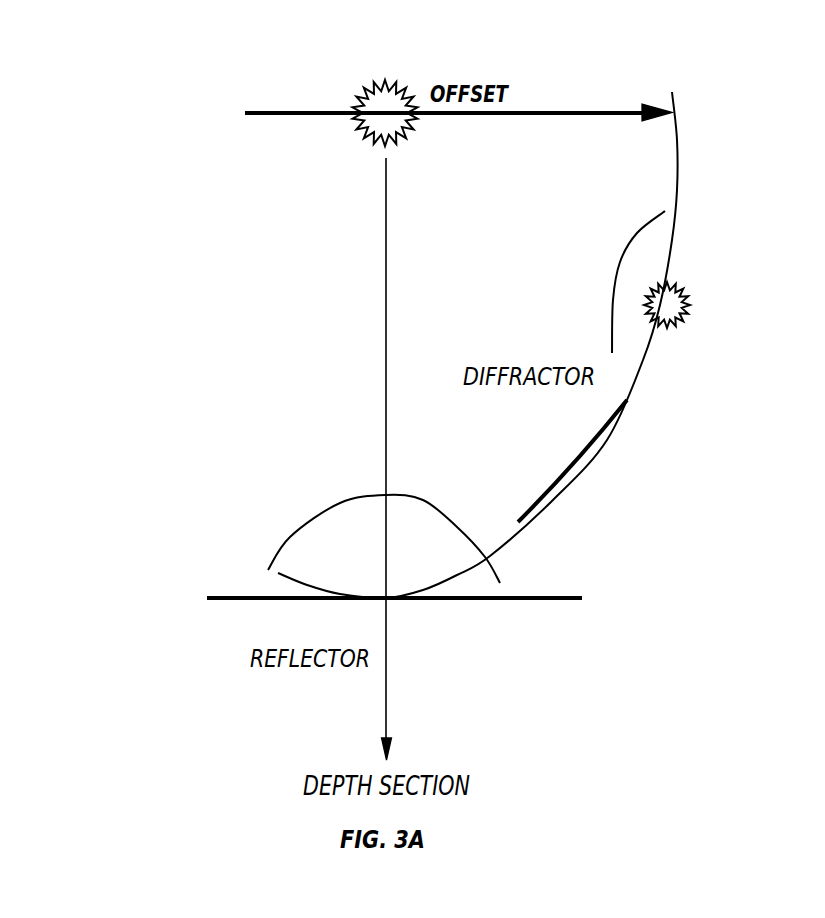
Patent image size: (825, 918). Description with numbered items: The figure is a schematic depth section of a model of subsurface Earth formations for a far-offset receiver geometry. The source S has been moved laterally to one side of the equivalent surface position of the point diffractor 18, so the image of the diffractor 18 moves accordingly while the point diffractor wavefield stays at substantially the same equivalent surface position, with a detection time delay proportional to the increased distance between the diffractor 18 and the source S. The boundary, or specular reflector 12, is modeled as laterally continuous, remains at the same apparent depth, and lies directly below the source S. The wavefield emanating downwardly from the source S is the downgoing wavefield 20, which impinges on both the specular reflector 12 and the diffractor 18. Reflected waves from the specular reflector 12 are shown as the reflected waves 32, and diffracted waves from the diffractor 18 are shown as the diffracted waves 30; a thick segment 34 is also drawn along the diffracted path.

The source S is at (373, 80).
The boundary (specular reflector) 12 is at (480, 602).
The diffractor 18 is at (690, 308).
The downgoing wavefield 20 is at (307, 582).
The diffracted waves 30 is at (632, 240).
The reflected waves 32 is at (423, 502).
The tangent segment 34 is at (597, 448).